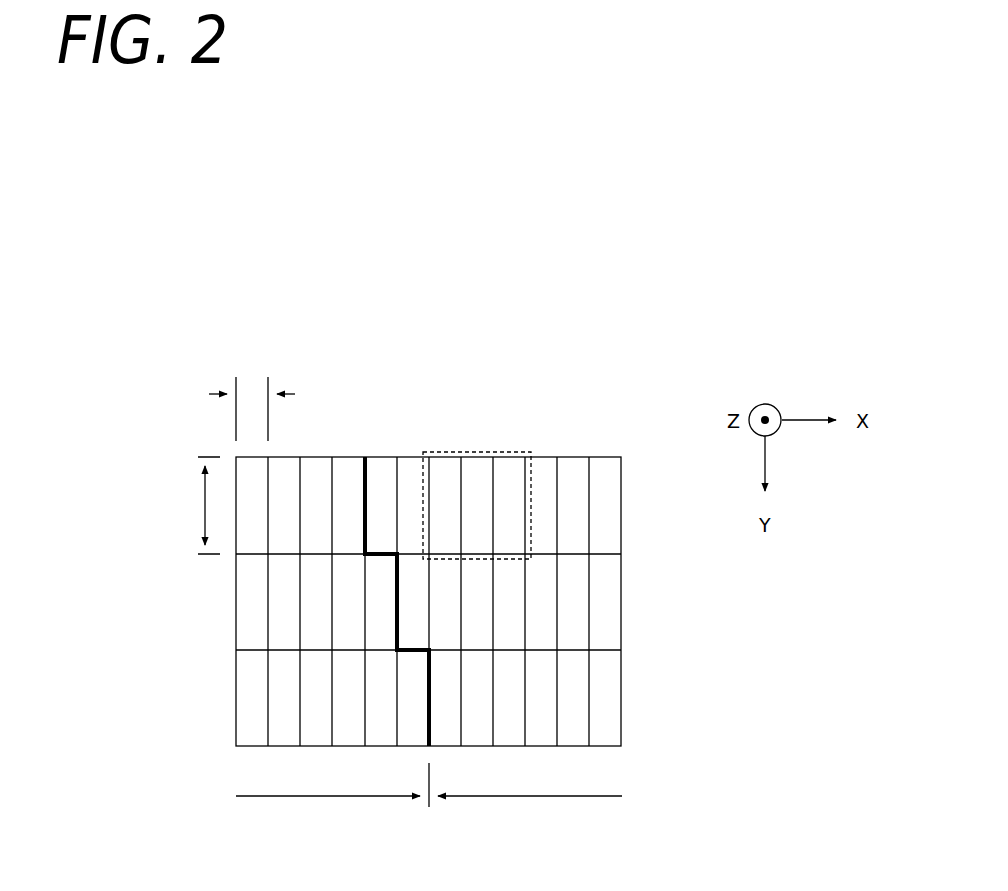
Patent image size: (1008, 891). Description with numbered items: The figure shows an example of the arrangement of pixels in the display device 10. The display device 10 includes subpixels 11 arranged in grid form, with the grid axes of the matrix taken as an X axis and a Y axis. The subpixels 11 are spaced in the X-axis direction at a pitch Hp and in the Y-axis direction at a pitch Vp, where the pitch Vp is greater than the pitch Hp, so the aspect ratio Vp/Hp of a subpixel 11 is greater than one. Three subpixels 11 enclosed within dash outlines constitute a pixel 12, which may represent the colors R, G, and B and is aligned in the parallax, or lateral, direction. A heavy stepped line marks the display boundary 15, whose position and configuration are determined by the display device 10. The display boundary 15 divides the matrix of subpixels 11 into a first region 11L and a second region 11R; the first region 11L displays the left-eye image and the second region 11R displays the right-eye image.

The display device 10 is at (461, 569).
The subpixel 11 is at (614, 473).
The pixel 12 is at (475, 452).
The display boundary 15 is at (368, 466).
The first region 11L is at (325, 797).
The second region 11R is at (535, 797).
The pitch in the X-axis direction Hp is at (251, 390).
The pitch in the Y-axis direction Vp is at (205, 505).